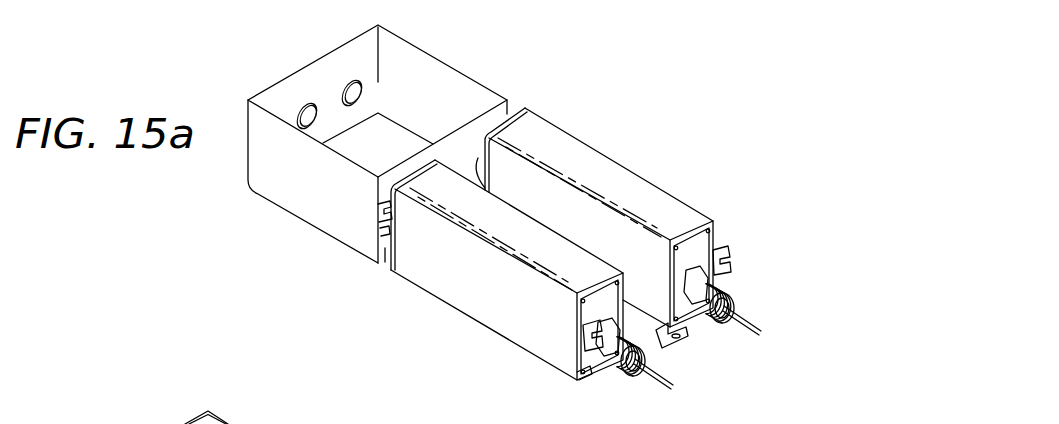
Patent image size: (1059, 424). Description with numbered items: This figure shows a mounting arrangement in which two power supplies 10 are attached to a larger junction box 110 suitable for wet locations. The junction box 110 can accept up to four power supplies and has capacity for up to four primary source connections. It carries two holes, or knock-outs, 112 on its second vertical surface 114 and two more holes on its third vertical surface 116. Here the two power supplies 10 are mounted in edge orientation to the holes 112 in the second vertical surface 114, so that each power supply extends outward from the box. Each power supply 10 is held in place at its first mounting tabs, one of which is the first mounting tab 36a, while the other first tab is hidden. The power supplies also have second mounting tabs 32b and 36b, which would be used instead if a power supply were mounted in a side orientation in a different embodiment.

The power supply 10 is at (690, 191).
The junction box 110 is at (448, 62).
The holes 112 is at (353, 83).
The second vertical surface 114 is at (385, 253).
The third vertical surface 116 is at (272, 85).
The second mounting tab 32b is at (377, 218).
The first mounting tab 36a is at (673, 348).
The second mounting tab 36b is at (580, 338).